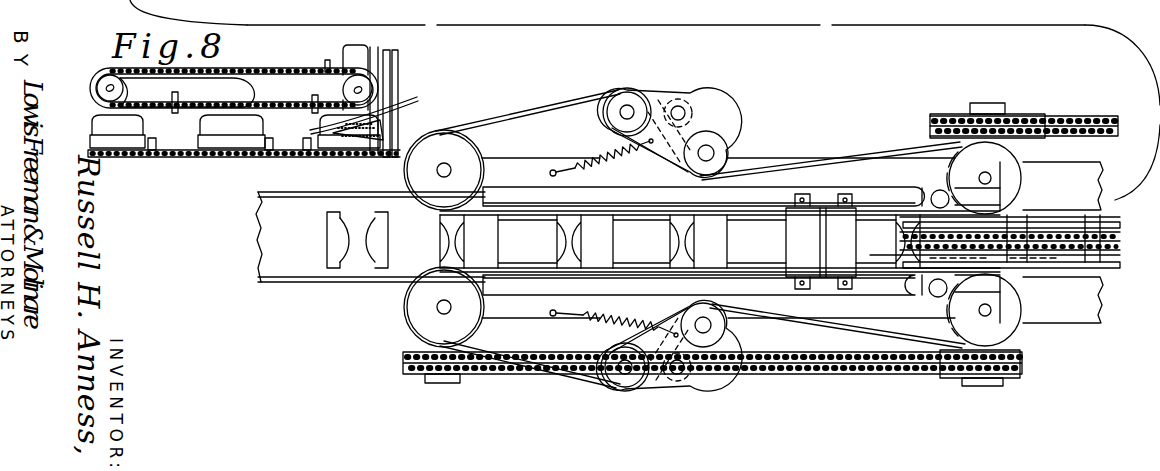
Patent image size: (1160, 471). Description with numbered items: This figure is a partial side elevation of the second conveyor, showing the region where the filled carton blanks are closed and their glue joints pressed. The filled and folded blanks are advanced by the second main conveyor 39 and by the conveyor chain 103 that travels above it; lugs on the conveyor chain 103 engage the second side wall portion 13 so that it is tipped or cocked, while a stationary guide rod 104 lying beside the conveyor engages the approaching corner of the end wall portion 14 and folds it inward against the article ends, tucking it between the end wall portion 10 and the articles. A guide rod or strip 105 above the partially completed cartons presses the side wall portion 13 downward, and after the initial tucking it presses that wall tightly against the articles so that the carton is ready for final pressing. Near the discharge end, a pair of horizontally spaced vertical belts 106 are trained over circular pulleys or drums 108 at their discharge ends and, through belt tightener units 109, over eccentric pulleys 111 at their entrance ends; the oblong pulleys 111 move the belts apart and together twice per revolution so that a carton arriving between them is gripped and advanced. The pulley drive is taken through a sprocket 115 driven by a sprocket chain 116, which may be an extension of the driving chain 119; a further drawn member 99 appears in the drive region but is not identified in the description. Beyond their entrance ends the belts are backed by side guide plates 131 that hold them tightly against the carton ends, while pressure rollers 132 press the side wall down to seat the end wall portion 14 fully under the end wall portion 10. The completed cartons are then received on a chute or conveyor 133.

The end wall portion 10 is at (217, 145).
The second side wall portion 13 is at (329, 248).
The end wall portion 14 is at (205, 127).
The second main conveyor 39 is at (177, 154).
The actuating rod 99 is at (404, 97).
The conveyor chain 103 is at (256, 68).
The stationary guide rod 104 is at (300, 148).
The guide rod or strip 105 is at (292, 113).
The vertical belts 106 is at (760, 206).
The circular pulleys or drums 108 is at (463, 149).
The belt tightener units 109 is at (697, 124).
The eccentric pulleys 111 is at (1000, 184).
The sprocket 115 is at (950, 97).
The sprocket chain 116 is at (1090, 115).
The driving chain 119 is at (383, 60).
The side guide plates 131 is at (860, 206).
The pressure rollers 132 is at (835, 245).
The chute or conveyor 133 is at (262, 252).